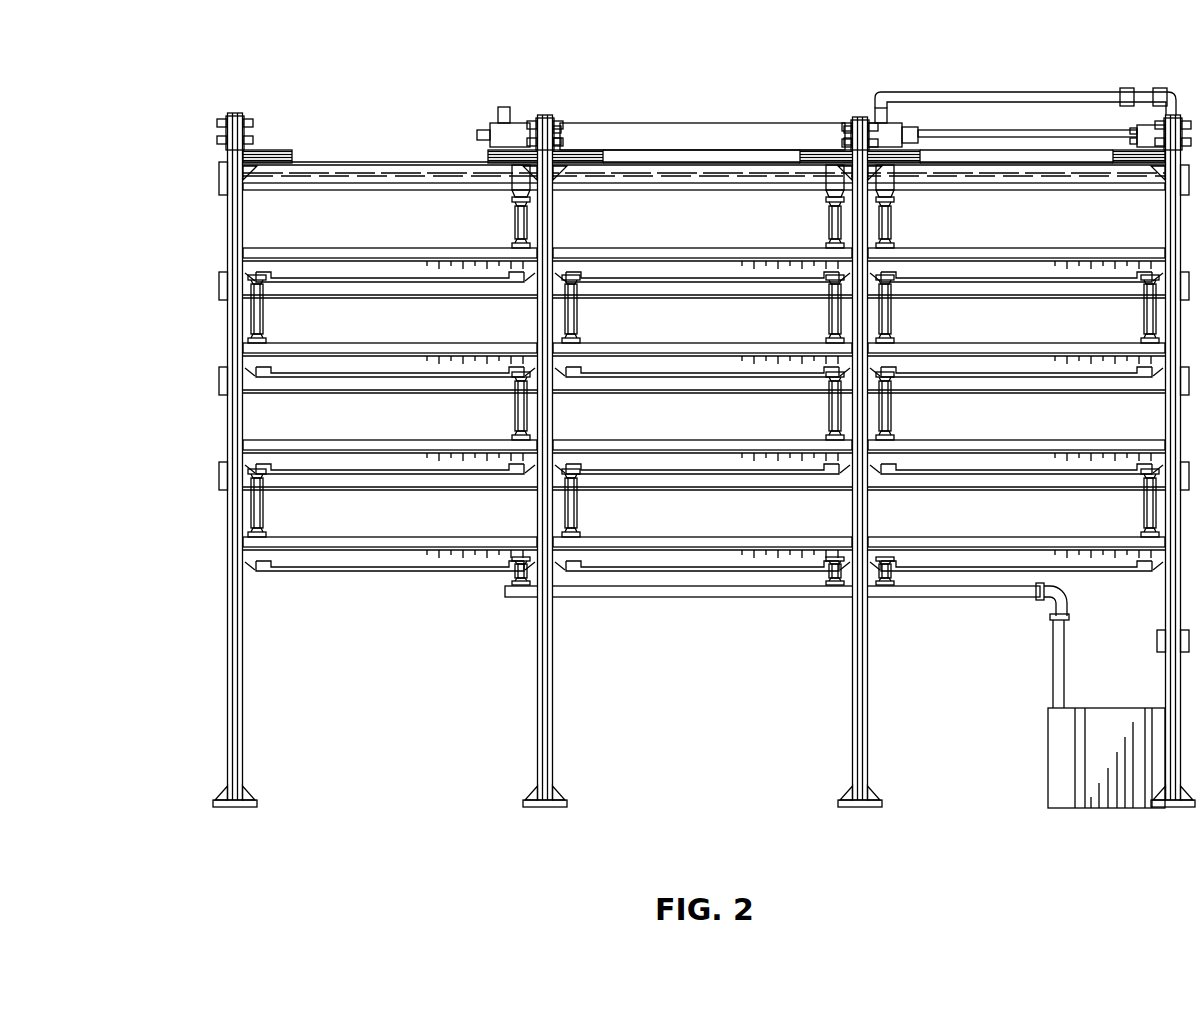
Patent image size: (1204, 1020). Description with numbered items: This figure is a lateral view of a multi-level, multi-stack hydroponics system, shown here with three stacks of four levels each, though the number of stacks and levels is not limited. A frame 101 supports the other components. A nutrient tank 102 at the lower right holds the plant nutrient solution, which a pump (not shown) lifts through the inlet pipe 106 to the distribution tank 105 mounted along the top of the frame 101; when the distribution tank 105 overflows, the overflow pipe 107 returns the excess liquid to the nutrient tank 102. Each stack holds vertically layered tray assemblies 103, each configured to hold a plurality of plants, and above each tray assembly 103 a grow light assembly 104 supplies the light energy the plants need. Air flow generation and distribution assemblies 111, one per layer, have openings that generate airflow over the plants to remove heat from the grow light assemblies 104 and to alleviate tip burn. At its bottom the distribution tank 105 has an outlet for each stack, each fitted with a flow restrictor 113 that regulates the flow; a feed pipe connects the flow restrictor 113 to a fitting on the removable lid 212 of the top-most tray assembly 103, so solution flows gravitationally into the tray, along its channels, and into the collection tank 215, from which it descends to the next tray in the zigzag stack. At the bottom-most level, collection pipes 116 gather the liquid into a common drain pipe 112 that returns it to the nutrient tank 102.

The frame 101 is at (227, 640).
The nutrient tank 102 is at (1112, 800).
The tray assembly 103 is at (1060, 460).
The grow light assembly 104 is at (1008, 368).
The distribution tank 105 is at (665, 132).
The inlet pipe 106 is at (945, 130).
The overflow pipe 107 is at (1060, 93).
The air flow generation and distribution assembly 111 is at (333, 176).
The drain pipe 112 is at (948, 598).
The flow restrictor 113 is at (510, 176).
The collection pipe 116 is at (512, 568).
The removable lid 212 is at (243, 340).
The collection tank 215 is at (243, 463).